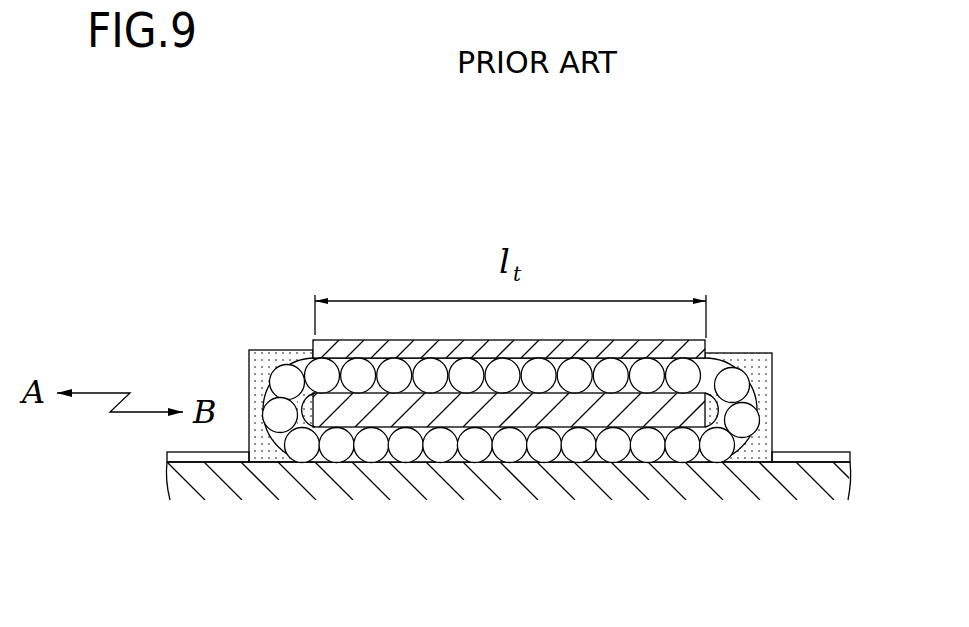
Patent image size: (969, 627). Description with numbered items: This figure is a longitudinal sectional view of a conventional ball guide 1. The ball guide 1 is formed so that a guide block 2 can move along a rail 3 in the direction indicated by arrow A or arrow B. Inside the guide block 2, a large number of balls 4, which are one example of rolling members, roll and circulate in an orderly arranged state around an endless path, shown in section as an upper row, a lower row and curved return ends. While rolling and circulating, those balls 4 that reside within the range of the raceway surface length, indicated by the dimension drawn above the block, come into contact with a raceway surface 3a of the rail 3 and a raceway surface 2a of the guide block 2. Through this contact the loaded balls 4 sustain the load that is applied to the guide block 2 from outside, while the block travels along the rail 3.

The ball guide 1 is at (510, 333).
The guide block 2 is at (608, 340).
The raceway surface of the guide block 2a is at (578, 432).
The rail 3 is at (511, 402).
The raceway surface of the rail 3a is at (803, 452).
The balls 4 is at (447, 357).